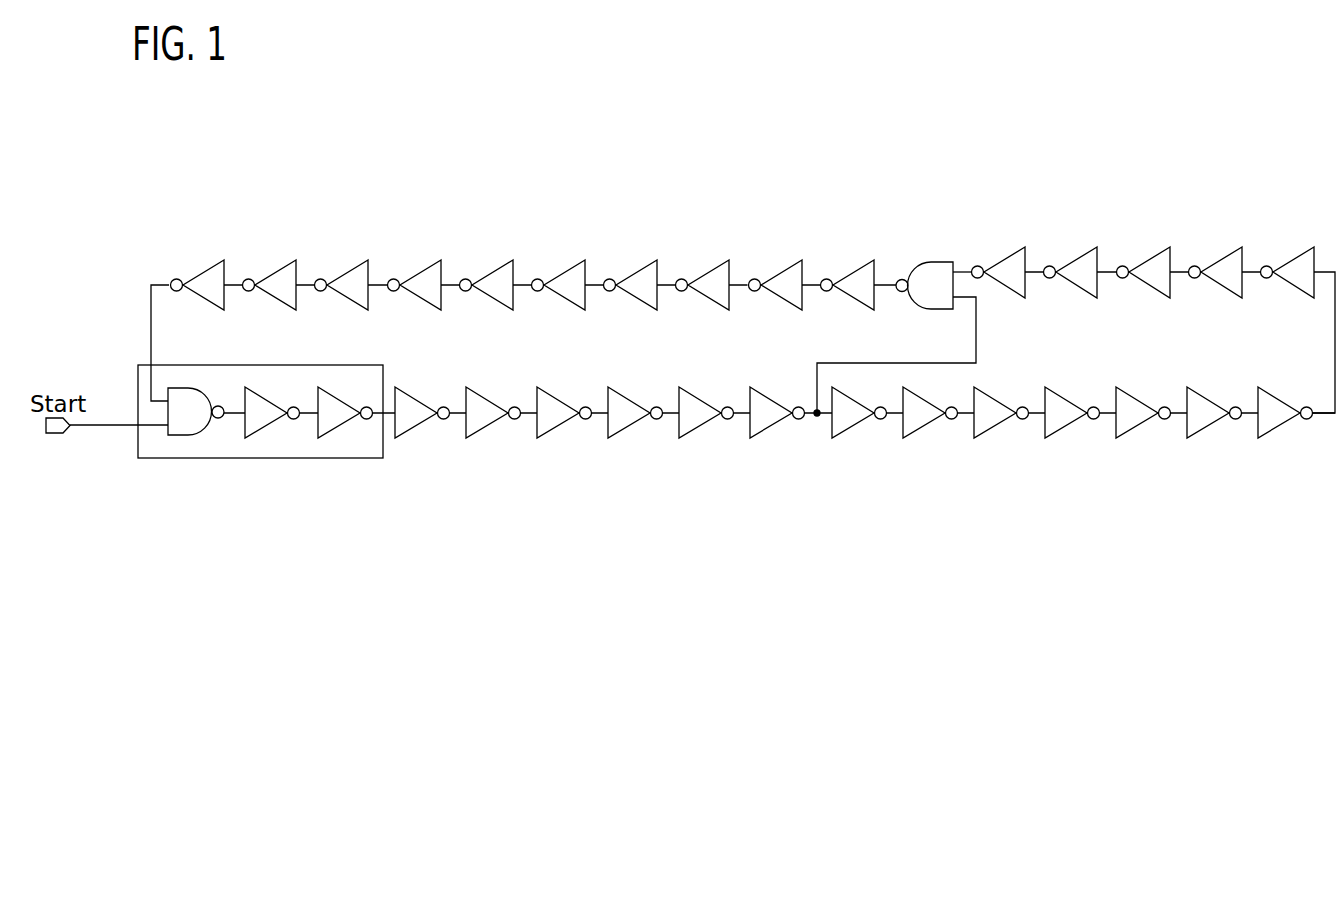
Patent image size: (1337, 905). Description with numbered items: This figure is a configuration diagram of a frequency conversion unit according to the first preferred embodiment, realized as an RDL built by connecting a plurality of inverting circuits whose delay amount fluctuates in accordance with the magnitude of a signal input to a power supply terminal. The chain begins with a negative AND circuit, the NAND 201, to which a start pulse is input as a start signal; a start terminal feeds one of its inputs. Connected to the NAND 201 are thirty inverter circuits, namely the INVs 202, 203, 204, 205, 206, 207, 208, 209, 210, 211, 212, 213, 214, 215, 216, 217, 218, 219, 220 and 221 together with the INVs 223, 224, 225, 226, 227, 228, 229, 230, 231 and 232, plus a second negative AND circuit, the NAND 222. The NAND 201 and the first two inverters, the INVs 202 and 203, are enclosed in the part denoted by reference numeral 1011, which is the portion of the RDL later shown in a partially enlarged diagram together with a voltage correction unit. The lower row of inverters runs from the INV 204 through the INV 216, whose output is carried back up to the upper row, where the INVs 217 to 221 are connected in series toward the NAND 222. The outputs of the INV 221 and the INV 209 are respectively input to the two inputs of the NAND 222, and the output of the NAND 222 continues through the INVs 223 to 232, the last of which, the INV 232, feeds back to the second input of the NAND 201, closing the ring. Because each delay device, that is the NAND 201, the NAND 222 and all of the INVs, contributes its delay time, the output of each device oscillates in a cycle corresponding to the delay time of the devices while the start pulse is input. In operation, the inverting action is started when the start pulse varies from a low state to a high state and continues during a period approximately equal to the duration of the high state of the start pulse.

The part of RDL 1011 is at (310, 365).
The negative AND circuit (NAND) 201 is at (183, 437).
The inverter circuit (INV) 202 is at (263, 432).
The inverter circuit (INV) 203 is at (337, 432).
The inverter circuit (INV) 204 is at (412, 431).
The inverter circuit (INV) 205 is at (483, 431).
The inverter circuit (INV) 206 is at (554, 431).
The inverter circuit (INV) 207 is at (625, 431).
The inverter circuit (INV) 208 is at (696, 431).
The inverter circuit (INV) 209 is at (767, 431).
The inverter circuit (INV) 210 is at (849, 431).
The inverter circuit (INV) 211 is at (920, 431).
The inverter circuit (INV) 212 is at (991, 431).
The inverter circuit (INV) 213 is at (1062, 431).
The inverter circuit (INV) 214 is at (1133, 431).
The inverter circuit (INV) 215 is at (1204, 431).
The inverter circuit (INV) 216 is at (1275, 431).
The inverter circuit (INV) 217 is at (1293, 255).
The inverter circuit (INV) 218 is at (1221, 255).
The inverter circuit (INV) 219 is at (1149, 255).
The inverter circuit (INV) 220 is at (1076, 255).
The inverter circuit (INV) 221 is at (1004, 255).
The NAND 222 is at (930, 262).
The inverter circuit (INV) 223 is at (853, 267).
The inverter circuit (INV) 224 is at (781, 267).
The inverter circuit (INV) 225 is at (708, 267).
The inverter circuit (INV) 226 is at (636, 267).
The inverter circuit (INV) 227 is at (564, 267).
The inverter circuit (INV) 228 is at (492, 267).
The inverter circuit (INV) 229 is at (420, 267).
The inverter circuit (INV) 230 is at (347, 267).
The inverter circuit (INV) 231 is at (275, 267).
The inverter circuit (INV) 232 is at (203, 267).